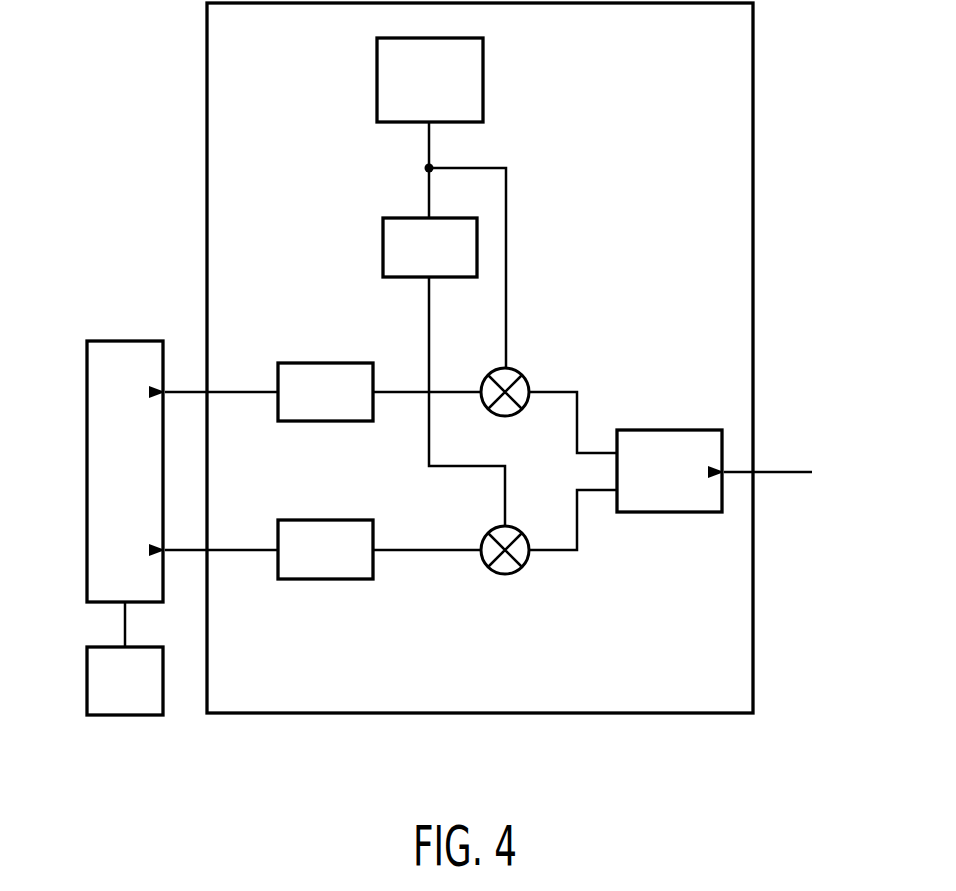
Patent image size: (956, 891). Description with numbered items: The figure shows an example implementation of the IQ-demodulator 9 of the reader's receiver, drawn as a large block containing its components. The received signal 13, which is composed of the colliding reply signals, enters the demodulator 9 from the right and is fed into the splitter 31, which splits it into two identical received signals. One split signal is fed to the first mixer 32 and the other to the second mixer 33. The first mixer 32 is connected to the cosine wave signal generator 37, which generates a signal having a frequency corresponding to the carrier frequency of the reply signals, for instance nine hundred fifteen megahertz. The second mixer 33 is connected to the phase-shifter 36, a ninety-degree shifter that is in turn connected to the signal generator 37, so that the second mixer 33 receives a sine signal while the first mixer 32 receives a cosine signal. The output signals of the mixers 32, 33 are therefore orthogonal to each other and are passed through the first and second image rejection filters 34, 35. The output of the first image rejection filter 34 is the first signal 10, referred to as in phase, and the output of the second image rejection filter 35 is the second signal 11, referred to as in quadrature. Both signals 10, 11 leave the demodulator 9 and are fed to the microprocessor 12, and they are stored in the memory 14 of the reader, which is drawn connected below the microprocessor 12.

The IQ-demodulator 9 is at (740, 133).
The first signal 10 is at (242, 388).
The second signal 11 is at (240, 553).
The microprocessor 12 is at (127, 350).
The received signal 13 is at (784, 468).
The memory 14 is at (125, 703).
The splitter 31 is at (668, 440).
The first mixer 32 is at (518, 370).
The second mixer 33 is at (505, 576).
The first image rejection filter 34 is at (325, 375).
The second image rejection filter 35 is at (325, 568).
The phase-shifter 36 is at (395, 247).
The cosine wave signal generator 37 is at (388, 80).